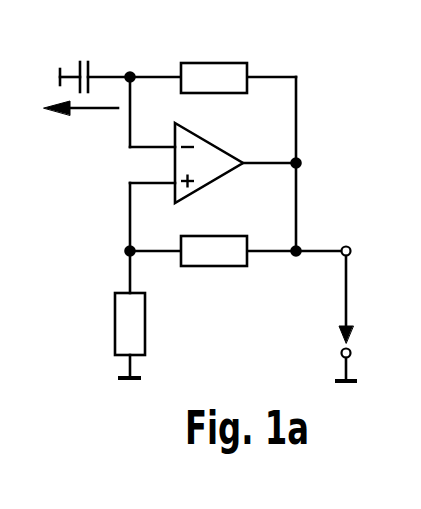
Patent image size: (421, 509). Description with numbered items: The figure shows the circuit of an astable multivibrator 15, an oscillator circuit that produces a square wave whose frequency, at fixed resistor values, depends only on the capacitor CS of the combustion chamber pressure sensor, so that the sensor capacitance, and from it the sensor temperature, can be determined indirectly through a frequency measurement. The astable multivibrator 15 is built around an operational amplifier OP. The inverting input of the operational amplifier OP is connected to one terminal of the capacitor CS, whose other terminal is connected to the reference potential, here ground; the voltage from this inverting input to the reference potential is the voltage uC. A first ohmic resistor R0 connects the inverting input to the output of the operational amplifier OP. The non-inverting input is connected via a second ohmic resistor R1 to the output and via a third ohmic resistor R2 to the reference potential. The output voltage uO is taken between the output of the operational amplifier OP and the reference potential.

The astable multivibrator 15 is at (213, 193).
The capacitor of combustion chamber pressure sensor CS is at (80, 60).
The operational amplifier OP is at (210, 158).
The first ohmic resistor R0 is at (214, 60).
The second ohmic resistor R1 is at (214, 271).
The third ohmic resistor R2 is at (149, 327).